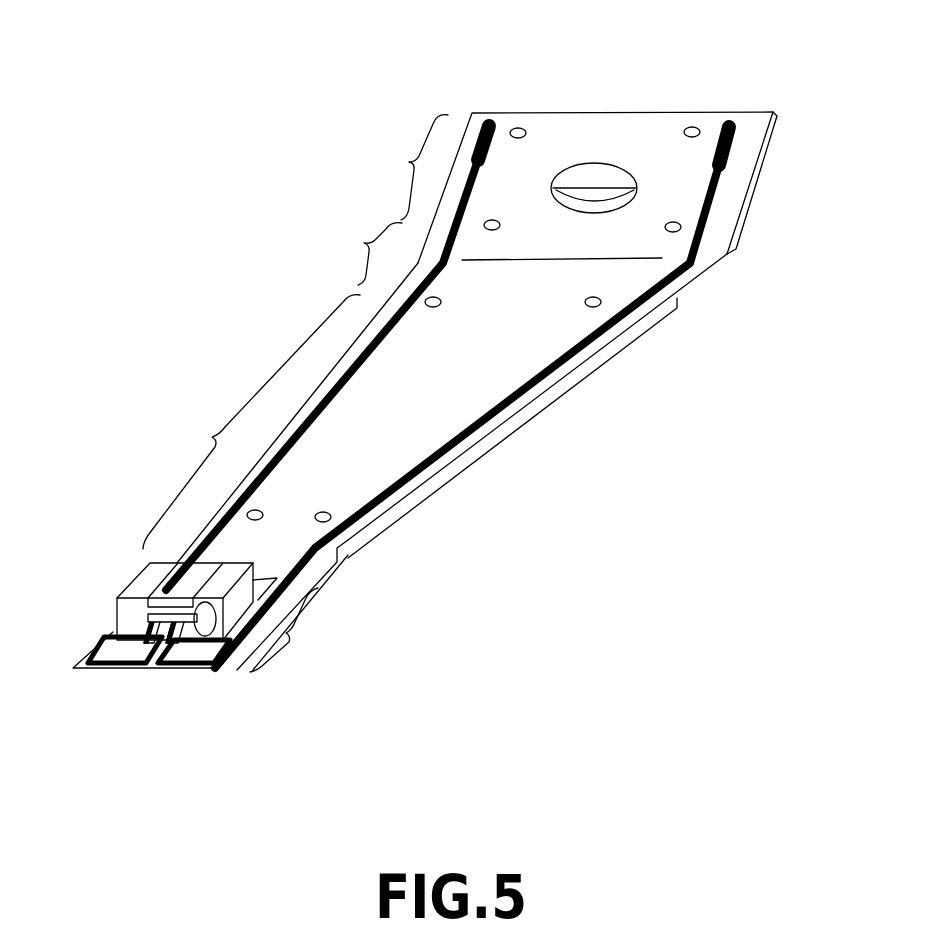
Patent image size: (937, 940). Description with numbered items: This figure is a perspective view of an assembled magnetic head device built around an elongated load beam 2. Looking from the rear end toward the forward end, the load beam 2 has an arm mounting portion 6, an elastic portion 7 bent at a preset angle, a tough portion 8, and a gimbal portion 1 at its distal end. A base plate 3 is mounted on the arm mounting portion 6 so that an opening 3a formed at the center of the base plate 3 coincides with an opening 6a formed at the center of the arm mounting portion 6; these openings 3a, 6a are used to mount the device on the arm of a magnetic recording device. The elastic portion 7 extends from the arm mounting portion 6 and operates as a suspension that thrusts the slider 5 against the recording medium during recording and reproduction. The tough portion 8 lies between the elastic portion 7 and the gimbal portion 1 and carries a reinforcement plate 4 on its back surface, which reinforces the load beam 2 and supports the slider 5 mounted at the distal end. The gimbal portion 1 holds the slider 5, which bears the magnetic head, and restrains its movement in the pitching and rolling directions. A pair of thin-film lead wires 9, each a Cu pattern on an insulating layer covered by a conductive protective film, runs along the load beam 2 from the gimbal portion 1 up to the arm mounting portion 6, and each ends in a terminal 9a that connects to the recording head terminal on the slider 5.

The gimbal portion 1 is at (310, 660).
The load beam 2 is at (409, 436).
The base plate 3 is at (766, 175).
The opening 3a is at (583, 190).
The reinforcement plate 4 is at (594, 378).
The slider 5 is at (117, 571).
The arm mounting portion 6 is at (416, 167).
The opening 6a is at (612, 210).
The elastic portion 7 is at (373, 254).
The tough portion 8 is at (251, 422).
The thin-film lead wire 9 is at (473, 181).
The terminal 9a is at (177, 645).